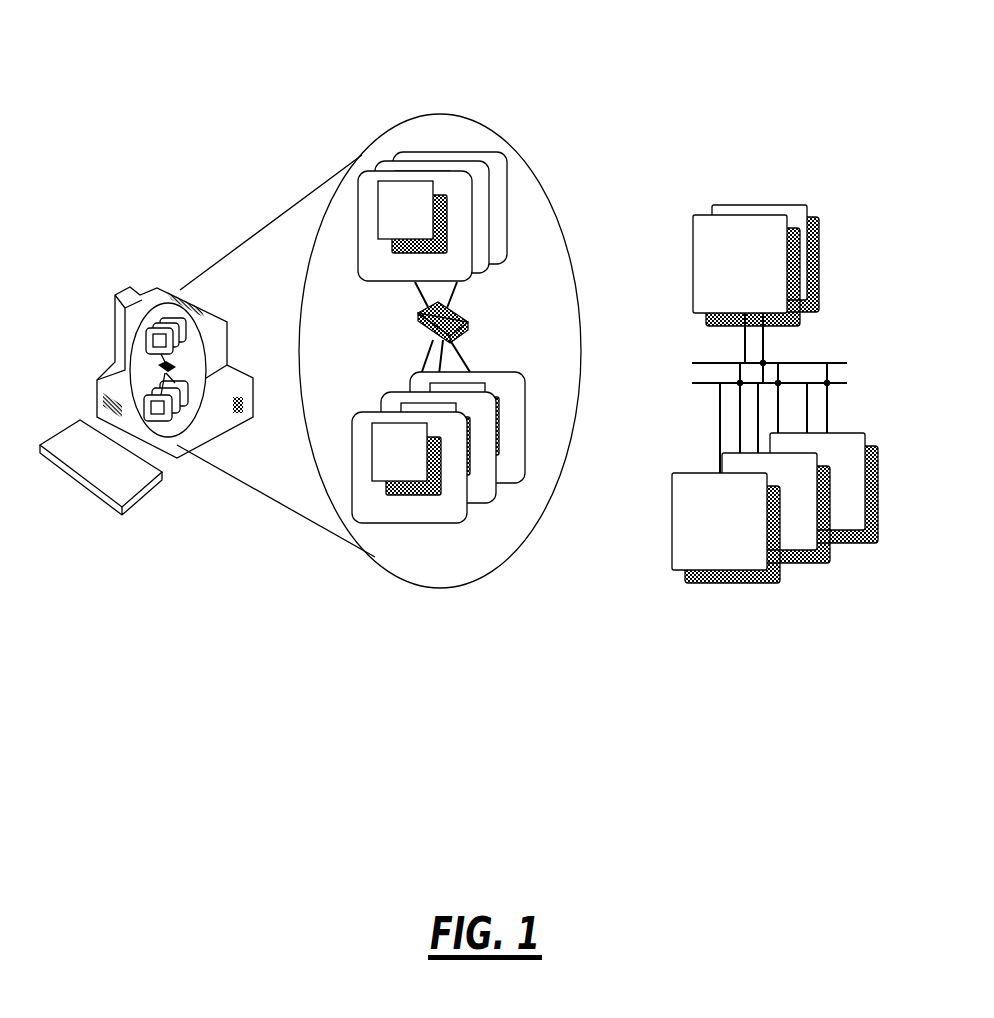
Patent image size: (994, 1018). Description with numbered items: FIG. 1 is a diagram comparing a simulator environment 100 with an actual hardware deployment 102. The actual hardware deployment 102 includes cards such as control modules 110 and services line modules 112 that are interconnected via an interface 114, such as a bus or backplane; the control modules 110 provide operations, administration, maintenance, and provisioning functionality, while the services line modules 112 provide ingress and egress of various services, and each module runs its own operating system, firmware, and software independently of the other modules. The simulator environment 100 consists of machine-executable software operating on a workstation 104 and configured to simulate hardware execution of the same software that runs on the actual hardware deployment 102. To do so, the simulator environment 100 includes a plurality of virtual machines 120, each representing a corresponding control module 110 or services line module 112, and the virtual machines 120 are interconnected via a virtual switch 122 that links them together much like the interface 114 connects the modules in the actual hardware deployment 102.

The simulator environment 100 is at (453, 57).
The actual hardware deployment 102 is at (775, 168).
The workstation 104 is at (155, 252).
The control modules 110 is at (803, 245).
The services line modules 112 is at (658, 557).
The interface 114 is at (697, 385).
The virtual machines 120 is at (520, 182).
The virtual switch 122 is at (463, 308).